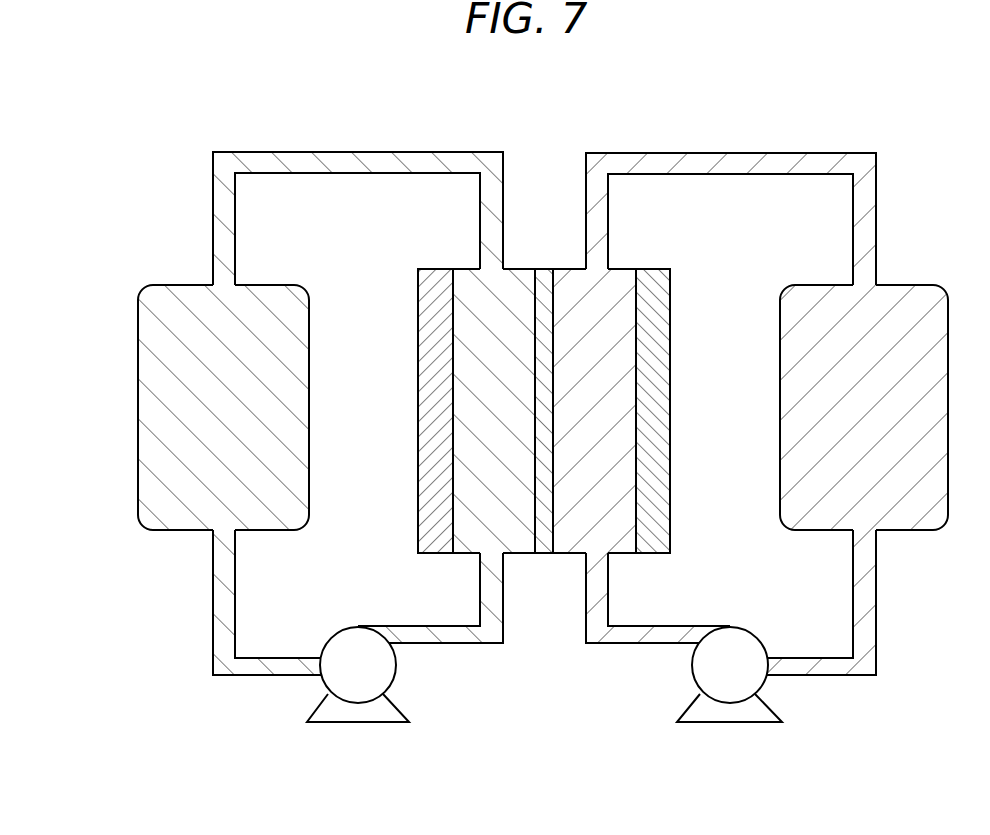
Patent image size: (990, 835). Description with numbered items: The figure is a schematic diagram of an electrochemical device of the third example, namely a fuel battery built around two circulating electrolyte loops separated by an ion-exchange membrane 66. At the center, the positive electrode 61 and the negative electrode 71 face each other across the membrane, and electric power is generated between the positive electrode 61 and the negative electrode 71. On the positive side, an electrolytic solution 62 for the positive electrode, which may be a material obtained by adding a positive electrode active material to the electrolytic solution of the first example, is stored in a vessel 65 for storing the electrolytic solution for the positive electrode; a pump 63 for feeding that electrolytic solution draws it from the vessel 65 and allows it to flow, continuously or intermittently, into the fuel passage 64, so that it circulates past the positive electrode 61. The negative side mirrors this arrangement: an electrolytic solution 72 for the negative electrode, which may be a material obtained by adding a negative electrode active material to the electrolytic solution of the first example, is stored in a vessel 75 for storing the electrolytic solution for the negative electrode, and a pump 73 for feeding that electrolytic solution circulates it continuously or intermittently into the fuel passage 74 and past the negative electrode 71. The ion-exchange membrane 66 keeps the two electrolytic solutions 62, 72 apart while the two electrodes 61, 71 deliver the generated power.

The positive electrode 61 is at (658, 410).
The electrolytic solution for the positive electrode 62 is at (597, 478).
The pump for feeding the electrolytic solution for the positive electrode 63 is at (735, 627).
The fuel passage 64 is at (712, 153).
The vessel for storing the electrolytic solution for the positive electrode 65 is at (912, 285).
The ion-exchange membrane 66 is at (543, 527).
The negative electrode 71 is at (430, 393).
The electrolytic solution for the negative electrode 72 is at (465, 480).
The pump for feeding the electrolytic solution for the negative electrode 73 is at (355, 627).
The fuel passage 74 is at (374, 152).
The vessel for storing the electrolytic solution for the negative electrode 75 is at (175, 285).